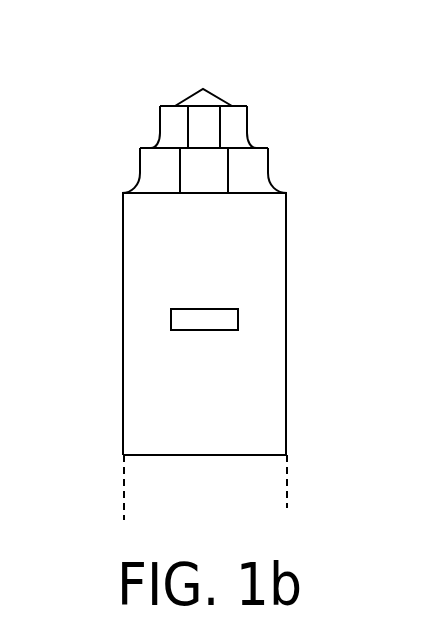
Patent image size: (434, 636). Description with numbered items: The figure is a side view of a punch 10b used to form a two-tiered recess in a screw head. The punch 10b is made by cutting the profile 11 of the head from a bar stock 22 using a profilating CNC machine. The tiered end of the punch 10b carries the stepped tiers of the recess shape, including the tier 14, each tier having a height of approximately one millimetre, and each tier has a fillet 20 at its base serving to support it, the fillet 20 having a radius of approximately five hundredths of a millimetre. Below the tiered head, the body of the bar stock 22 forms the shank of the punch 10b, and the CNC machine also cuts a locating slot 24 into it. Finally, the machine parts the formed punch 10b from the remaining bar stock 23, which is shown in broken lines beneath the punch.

The profile 11 is at (138, 113).
The fillet 20 is at (254, 146).
The tier 14 is at (140, 152).
The punch 10b is at (263, 302).
The bar stock 22 is at (138, 375).
The locating slot 24 is at (186, 316).
The remaining bar stock 23 is at (152, 480).